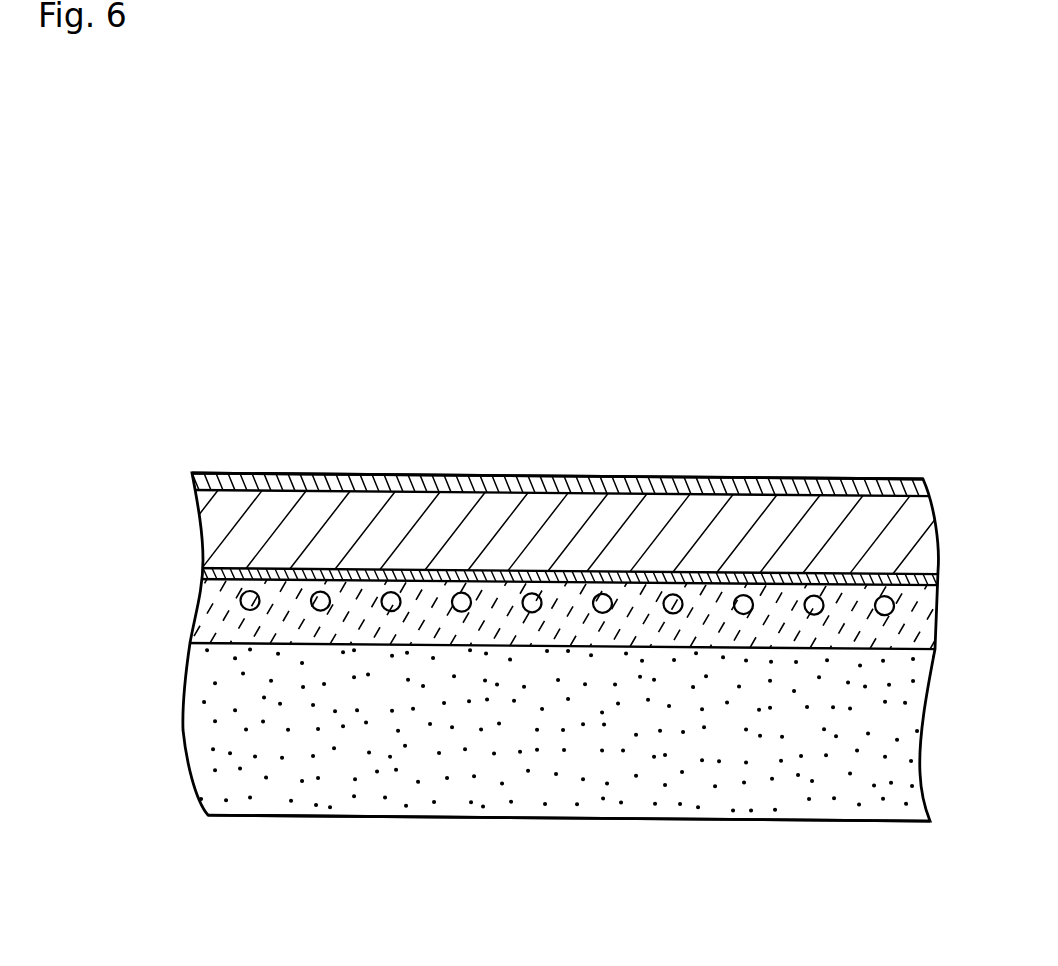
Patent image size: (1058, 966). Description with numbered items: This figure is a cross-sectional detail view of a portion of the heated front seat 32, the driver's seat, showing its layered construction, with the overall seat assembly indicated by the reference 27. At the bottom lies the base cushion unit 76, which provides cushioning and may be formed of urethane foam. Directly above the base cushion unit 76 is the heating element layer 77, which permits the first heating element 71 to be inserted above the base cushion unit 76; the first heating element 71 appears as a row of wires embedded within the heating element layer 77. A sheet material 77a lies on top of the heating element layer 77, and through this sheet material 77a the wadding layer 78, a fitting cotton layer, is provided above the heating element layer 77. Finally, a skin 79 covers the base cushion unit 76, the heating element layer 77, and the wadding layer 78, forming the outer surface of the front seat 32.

The heating unit 27 is at (247, 237).
The front seat 32 is at (272, 353).
The skin 79 is at (435, 475).
The wadding layer 78 is at (493, 520).
The sheet material 77a is at (550, 573).
The first heating element 71 is at (609, 589).
The heating element layer 77 is at (775, 607).
The base cushion unit 76 is at (547, 778).